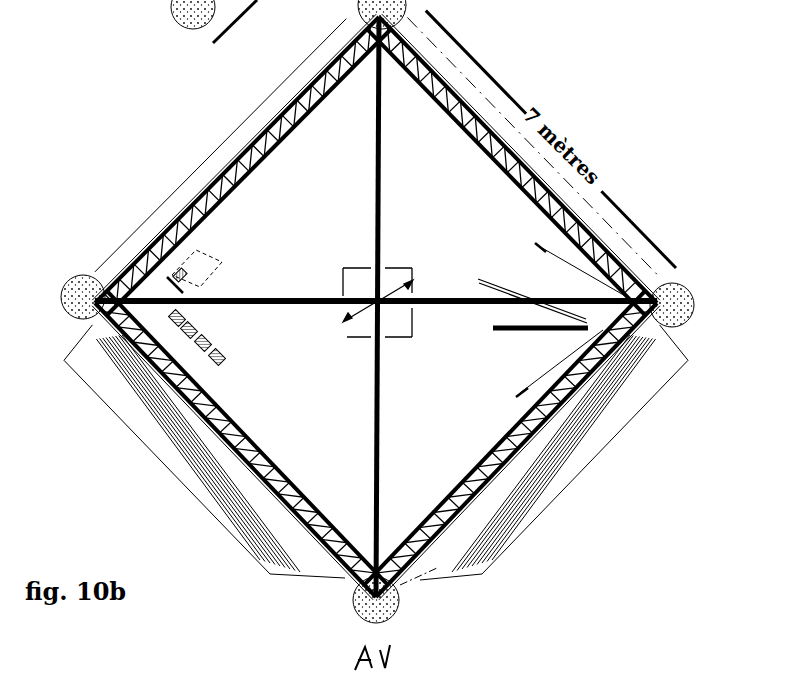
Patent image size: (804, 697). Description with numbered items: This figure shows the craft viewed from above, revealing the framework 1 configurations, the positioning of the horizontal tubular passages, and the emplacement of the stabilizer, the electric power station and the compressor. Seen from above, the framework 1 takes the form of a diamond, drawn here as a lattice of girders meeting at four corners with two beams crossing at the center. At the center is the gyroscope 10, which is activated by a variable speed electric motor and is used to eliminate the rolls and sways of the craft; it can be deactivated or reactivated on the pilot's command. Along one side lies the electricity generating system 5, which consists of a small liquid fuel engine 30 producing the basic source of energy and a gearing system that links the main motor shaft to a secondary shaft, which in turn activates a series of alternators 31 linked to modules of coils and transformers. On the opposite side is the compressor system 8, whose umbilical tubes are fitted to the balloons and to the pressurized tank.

The framework 1 is at (380, 307).
The electricity generating system 5 is at (223, 283).
The compressor system 8 is at (590, 305).
The gyroscope 10 is at (395, 338).
The small liquid fuel engine 30 is at (207, 258).
The alternators 31 is at (222, 328).